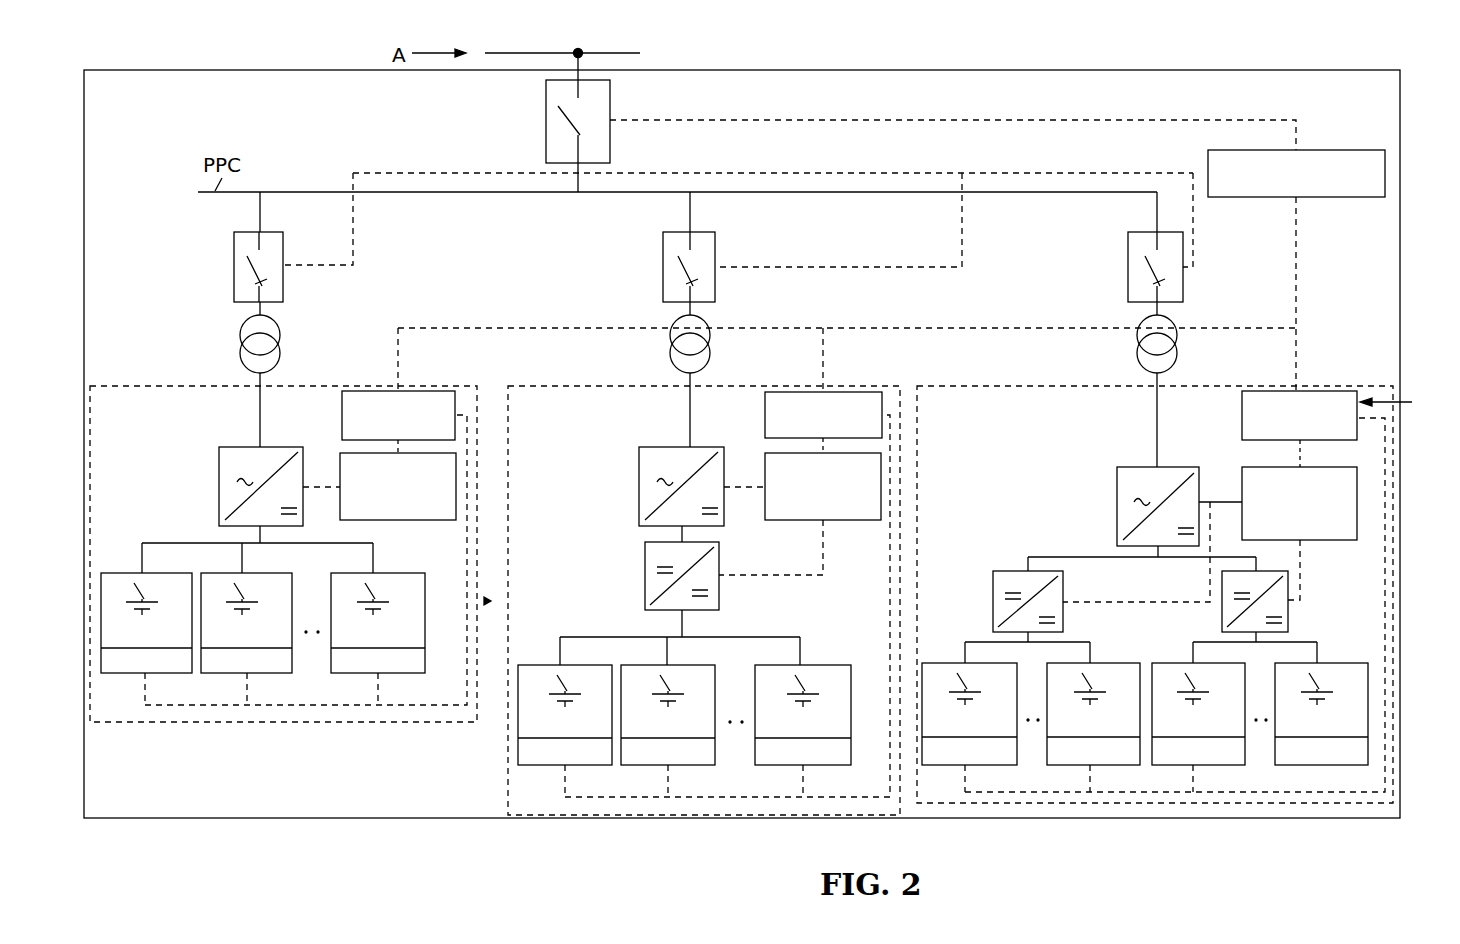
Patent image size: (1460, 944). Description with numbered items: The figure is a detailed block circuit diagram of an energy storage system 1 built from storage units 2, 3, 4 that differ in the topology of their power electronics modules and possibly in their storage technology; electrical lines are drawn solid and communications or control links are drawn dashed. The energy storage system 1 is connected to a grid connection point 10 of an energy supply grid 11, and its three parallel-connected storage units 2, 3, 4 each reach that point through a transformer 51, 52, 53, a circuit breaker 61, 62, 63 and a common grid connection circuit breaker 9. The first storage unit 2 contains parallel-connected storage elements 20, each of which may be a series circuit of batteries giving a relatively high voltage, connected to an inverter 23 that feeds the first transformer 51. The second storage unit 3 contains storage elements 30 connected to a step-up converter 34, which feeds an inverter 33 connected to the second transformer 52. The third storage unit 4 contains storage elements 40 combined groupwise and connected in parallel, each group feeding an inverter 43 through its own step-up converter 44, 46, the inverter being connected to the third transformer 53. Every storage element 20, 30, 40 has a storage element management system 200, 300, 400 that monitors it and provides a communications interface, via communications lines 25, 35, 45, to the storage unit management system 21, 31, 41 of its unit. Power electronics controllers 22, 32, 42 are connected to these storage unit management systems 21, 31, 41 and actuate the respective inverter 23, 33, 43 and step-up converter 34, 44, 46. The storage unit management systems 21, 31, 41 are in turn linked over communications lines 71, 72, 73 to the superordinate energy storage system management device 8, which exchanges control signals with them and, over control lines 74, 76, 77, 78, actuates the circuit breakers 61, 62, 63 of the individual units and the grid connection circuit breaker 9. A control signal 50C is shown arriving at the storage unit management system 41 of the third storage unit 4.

The energy storage system 1 is at (1133, 80).
The first storage unit 2 is at (136, 401).
The second storage unit 3 is at (548, 408).
The third storage unit 4 is at (1366, 393).
The energy storage system management device 8 is at (1348, 160).
The grid connection circuit breaker 9 is at (546, 92).
The grid connection point 10 is at (578, 49).
The energy supply grid 11 is at (630, 53).
The storage elements 20 is at (113, 595).
The storage unit management system 21 is at (440, 410).
The power electronics controller 22 is at (418, 506).
The inverter 23 is at (221, 458).
The communications line 25 is at (312, 707).
The storage elements 30 is at (826, 681).
The storage unit management system 31 is at (860, 408).
The power electronics controller 32 is at (870, 476).
The inverter 33 is at (650, 467).
The step-up converter 34 is at (650, 553).
The communications line 35 is at (727, 800).
The storage elements 40 is at (1338, 672).
The storage unit management system 41 is at (1313, 408).
The power electronics controller 42 is at (1243, 482).
The inverter 43 is at (1138, 477).
The step-up converter 44 is at (1005, 585).
The communications line 45 is at (1148, 796).
The step-up converter 46 is at (1283, 611).
The control signal 50C is at (1408, 402).
The first transformer 51 is at (274, 331).
The second transformer 52 is at (703, 327).
The third transformer 53 is at (1170, 327).
The circuit breaker 61 is at (242, 257).
The circuit breaker 62 is at (700, 249).
The circuit breaker 63 is at (1126, 252).
The communications line 71 is at (517, 328).
The communications line 72 is at (826, 362).
The communications line 73 is at (1300, 347).
The control line 74 is at (355, 232).
The control line 76 is at (1198, 258).
The control line 77 is at (791, 173).
The control line 78 is at (958, 121).
The storage element management system 200 is at (117, 664).
The storage element management system 300 is at (537, 753).
The storage element management system 400 is at (952, 750).